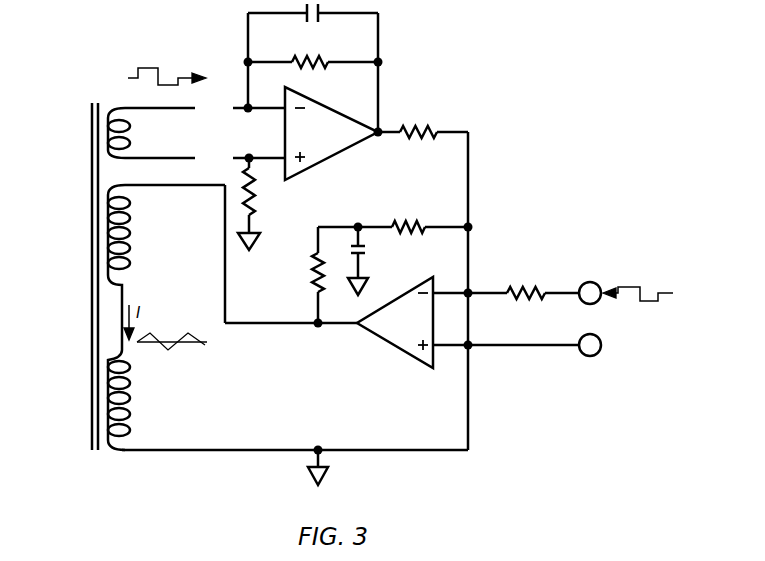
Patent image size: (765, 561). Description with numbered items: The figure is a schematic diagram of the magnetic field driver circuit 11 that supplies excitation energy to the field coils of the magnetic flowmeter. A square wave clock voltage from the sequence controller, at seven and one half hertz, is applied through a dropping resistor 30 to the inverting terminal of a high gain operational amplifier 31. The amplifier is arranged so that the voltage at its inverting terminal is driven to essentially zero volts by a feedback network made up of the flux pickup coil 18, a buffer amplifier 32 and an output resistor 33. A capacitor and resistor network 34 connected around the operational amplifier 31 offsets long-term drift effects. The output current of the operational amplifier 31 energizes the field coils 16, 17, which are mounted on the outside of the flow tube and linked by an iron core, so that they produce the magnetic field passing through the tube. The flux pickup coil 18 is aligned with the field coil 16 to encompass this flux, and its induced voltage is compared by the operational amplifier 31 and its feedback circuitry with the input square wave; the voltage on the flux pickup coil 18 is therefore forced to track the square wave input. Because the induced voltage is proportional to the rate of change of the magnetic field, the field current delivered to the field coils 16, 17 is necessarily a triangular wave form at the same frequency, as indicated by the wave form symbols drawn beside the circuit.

The magnetic field driver circuit 11 is at (415, 66).
The field coil 16 is at (108, 232).
The field coil 17 is at (108, 395).
The flux pickup coil 18 is at (108, 118).
The dropping resistor 30 is at (538, 287).
The operational amplifier 31 is at (392, 338).
The buffer amplifier 32 is at (347, 117).
The output resistor 33 is at (430, 128).
The capacitor and resistor network 34 is at (386, 213).